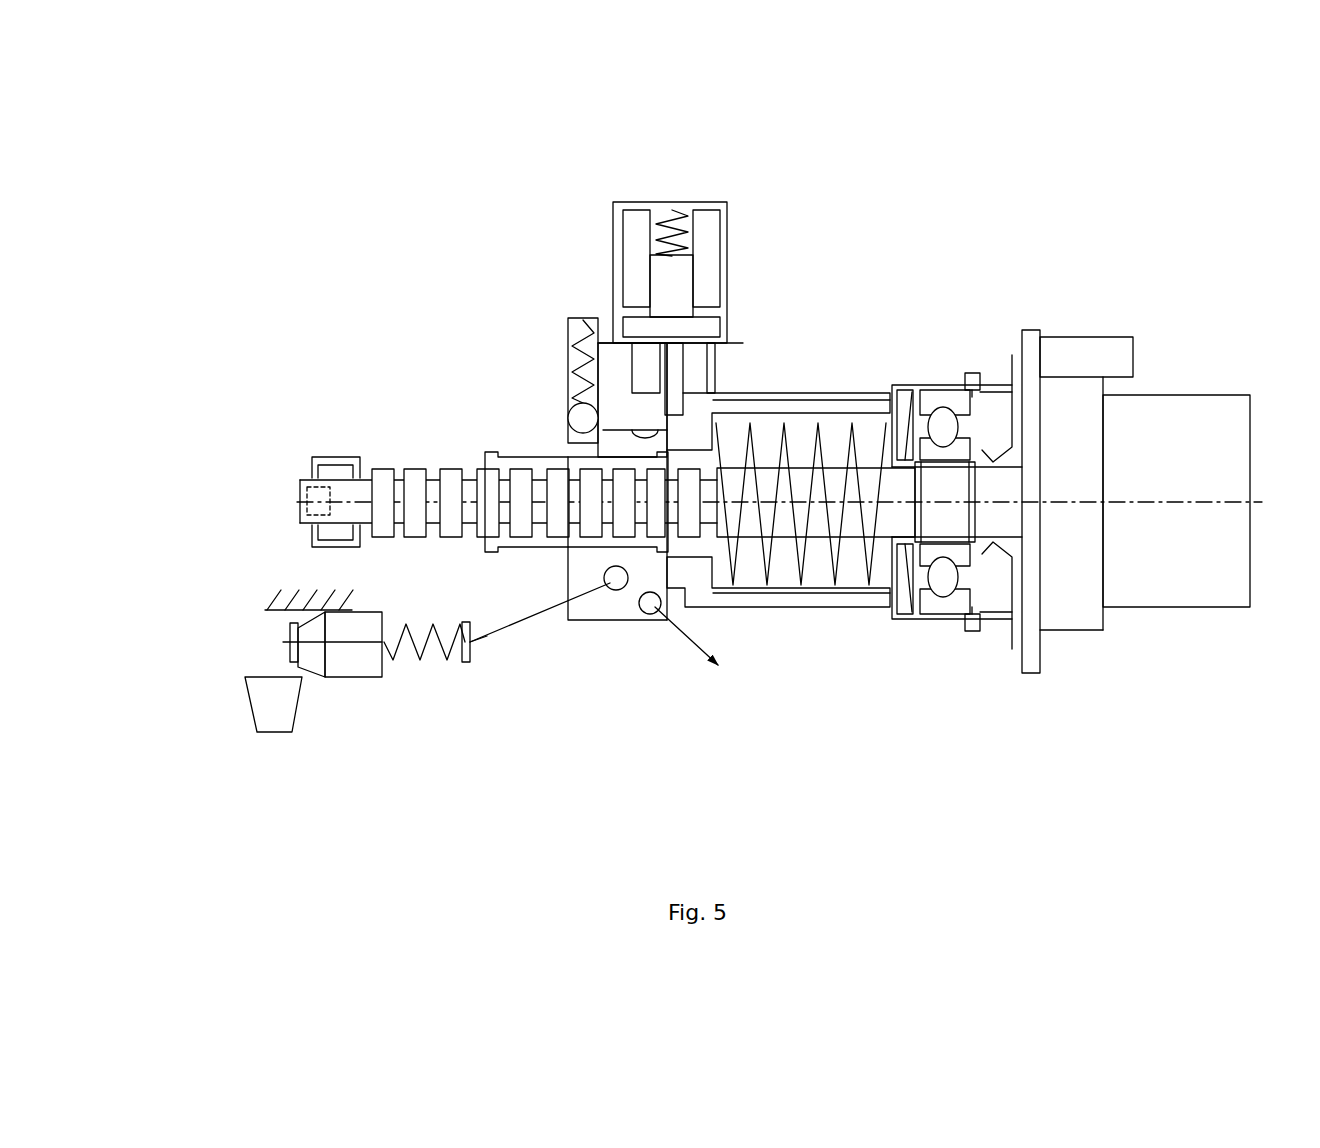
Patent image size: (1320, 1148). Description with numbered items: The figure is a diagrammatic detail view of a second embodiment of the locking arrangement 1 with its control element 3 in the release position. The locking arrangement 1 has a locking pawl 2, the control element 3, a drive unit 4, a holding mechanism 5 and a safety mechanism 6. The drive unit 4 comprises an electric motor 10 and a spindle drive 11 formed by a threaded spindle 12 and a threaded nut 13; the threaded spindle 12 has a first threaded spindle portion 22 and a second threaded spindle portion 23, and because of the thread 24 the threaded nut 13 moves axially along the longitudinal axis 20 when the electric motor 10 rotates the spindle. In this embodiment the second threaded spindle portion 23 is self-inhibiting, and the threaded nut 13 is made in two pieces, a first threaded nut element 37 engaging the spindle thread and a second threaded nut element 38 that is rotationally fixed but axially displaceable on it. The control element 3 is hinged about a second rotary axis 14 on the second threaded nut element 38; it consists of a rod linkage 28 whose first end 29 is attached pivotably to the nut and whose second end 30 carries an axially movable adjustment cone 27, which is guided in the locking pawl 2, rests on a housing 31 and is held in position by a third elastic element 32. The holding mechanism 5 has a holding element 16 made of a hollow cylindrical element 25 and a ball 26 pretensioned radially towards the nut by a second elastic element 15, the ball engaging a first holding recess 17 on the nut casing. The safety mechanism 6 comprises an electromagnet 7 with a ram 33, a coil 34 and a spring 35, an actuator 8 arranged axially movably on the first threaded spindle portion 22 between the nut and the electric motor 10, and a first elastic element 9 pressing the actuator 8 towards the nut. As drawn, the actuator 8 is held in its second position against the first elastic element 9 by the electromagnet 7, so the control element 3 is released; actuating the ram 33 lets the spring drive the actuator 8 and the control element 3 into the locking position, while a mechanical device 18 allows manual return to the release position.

The locking arrangement 1 is at (357, 188).
The locking pawl 2 is at (275, 707).
The control element 3 is at (607, 603).
The drive unit 4 is at (1050, 290).
The holding mechanism 5 is at (552, 370).
The safety mechanism 6 is at (800, 363).
The electromagnet 7 is at (703, 248).
The actuator 8 is at (797, 408).
The first elastic element 9 is at (853, 427).
The electric motor 10 is at (1167, 425).
The spindle drive 11 is at (773, 613).
The threaded spindle 12 is at (598, 505).
The threaded nut 13 is at (505, 543).
The second rotary axis 14 is at (623, 590).
The second elastic element 15 is at (578, 318).
The holding element 16 is at (517, 343).
The first holding recess 17 is at (683, 400).
The mechanical device 18 is at (703, 650).
The longitudinal axis 20 is at (981, 505).
The first threaded spindle portion 22 is at (897, 618).
The second threaded spindle portion 23 is at (422, 409).
The thread 24 is at (450, 485).
The cylindrical element 25 is at (600, 340).
The ball 26 is at (570, 423).
The adjustment cone 27 is at (370, 748).
The rod linkage 28 is at (538, 627).
The first end 29 is at (588, 573).
The second end 30 is at (368, 660).
The housing 31 is at (290, 597).
The third elastic element 32 is at (427, 655).
The ram 33 is at (723, 313).
The coil 34 is at (727, 203).
The spring 35 is at (688, 220).
The first threaded nut element 37 is at (533, 465).
The second threaded nut element 38 is at (647, 607).